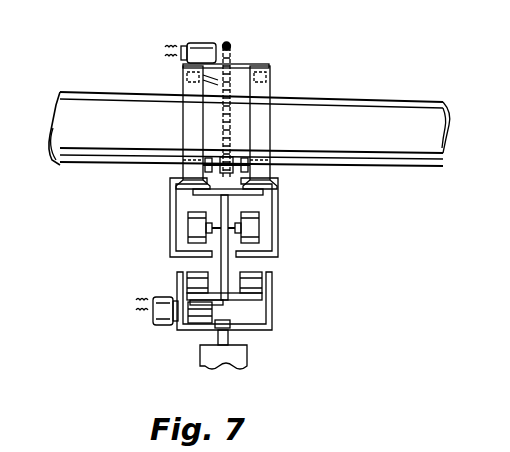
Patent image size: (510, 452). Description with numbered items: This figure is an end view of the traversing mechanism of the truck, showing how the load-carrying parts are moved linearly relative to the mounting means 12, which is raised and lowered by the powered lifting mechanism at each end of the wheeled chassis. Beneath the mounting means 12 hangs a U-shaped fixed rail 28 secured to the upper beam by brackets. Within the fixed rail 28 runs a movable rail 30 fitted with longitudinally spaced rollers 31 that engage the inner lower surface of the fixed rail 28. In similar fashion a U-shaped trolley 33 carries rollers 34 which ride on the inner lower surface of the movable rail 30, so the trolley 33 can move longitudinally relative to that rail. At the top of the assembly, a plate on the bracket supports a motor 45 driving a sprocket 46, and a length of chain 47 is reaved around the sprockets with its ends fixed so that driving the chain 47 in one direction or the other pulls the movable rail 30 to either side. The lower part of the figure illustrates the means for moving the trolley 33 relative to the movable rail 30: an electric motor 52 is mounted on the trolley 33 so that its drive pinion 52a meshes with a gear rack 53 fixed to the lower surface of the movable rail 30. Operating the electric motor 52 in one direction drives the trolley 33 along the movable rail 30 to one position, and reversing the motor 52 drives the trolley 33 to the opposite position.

The mounting means 12 is at (375, 96).
The fixed rail 28 is at (282, 222).
The movable rail 30 is at (236, 205).
The rollers 31 is at (188, 226).
The trolley 33 is at (273, 305).
The rollers 34 is at (258, 276).
The motor 45 is at (199, 42).
The sprocket 46 is at (232, 52).
The chain 47 is at (240, 66).
The electric motor 52 is at (158, 327).
The drive pinion 52a is at (198, 325).
The gear rack 53 is at (225, 310).